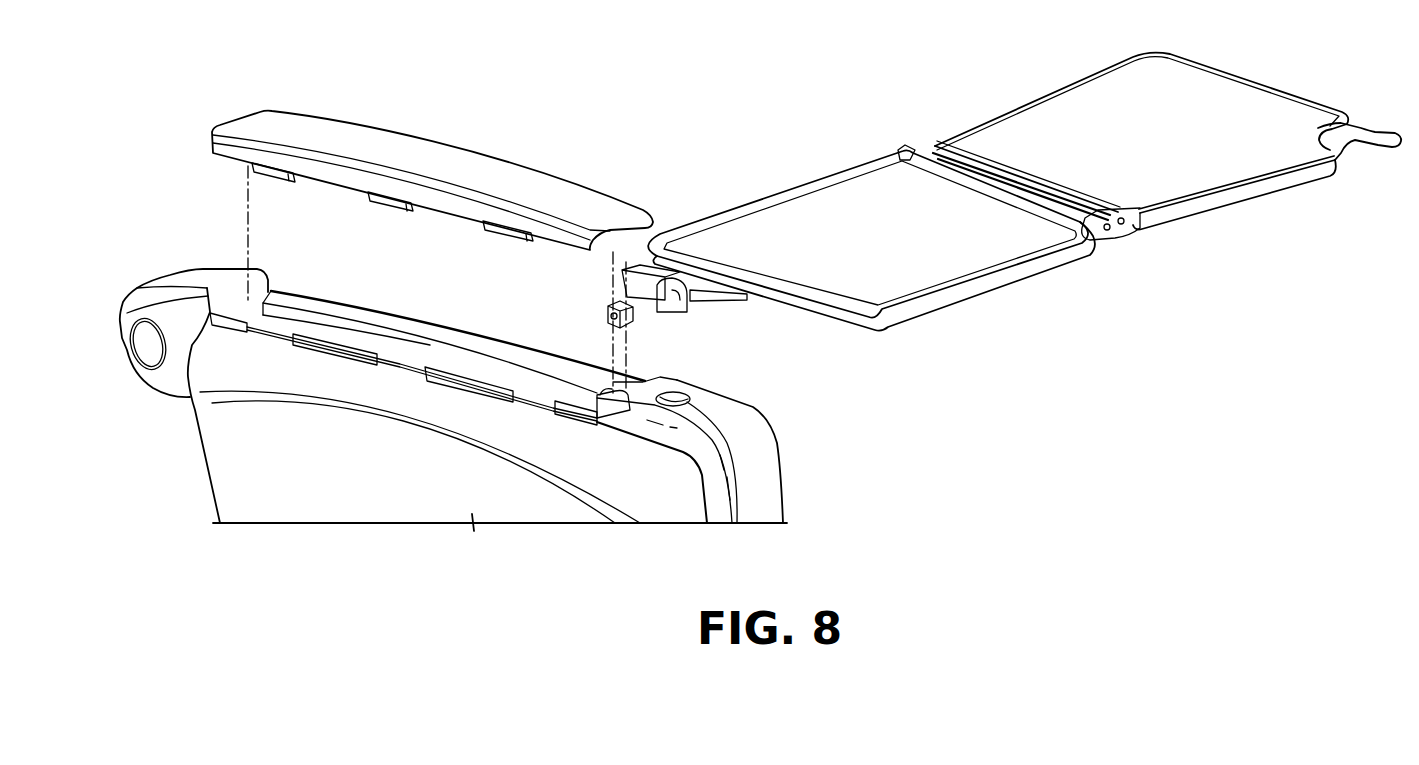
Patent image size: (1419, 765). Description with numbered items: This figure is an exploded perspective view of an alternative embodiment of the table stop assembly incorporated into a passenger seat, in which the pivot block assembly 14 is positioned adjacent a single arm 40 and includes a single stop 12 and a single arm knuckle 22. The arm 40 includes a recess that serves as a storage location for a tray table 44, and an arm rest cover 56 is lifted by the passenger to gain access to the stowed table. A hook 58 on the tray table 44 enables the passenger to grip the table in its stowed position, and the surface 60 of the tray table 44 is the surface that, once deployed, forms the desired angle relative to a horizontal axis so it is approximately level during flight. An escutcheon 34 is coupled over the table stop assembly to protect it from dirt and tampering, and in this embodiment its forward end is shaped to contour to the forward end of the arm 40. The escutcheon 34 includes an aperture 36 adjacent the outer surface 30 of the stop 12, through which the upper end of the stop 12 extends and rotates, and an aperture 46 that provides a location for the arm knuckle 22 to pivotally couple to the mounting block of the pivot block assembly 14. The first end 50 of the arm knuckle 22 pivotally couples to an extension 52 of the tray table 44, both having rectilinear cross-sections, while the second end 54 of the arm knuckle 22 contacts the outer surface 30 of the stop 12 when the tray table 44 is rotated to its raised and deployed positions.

The stop 12 is at (690, 397).
The pivot block assembly 14 is at (754, 324).
The arm knuckle 22 is at (678, 315).
The outer surface 30 is at (680, 401).
The escutcheon 34 is at (760, 450).
The aperture 36 is at (777, 490).
The arm 40 is at (257, 370).
The tray table 44 is at (783, 215).
The aperture 46 is at (587, 403).
The first end 50 is at (618, 300).
The extension 52 is at (697, 292).
The second end 54 is at (652, 312).
The arm rest cover 56 is at (487, 170).
The hook 58 is at (1377, 127).
The surface 60 is at (1185, 163).